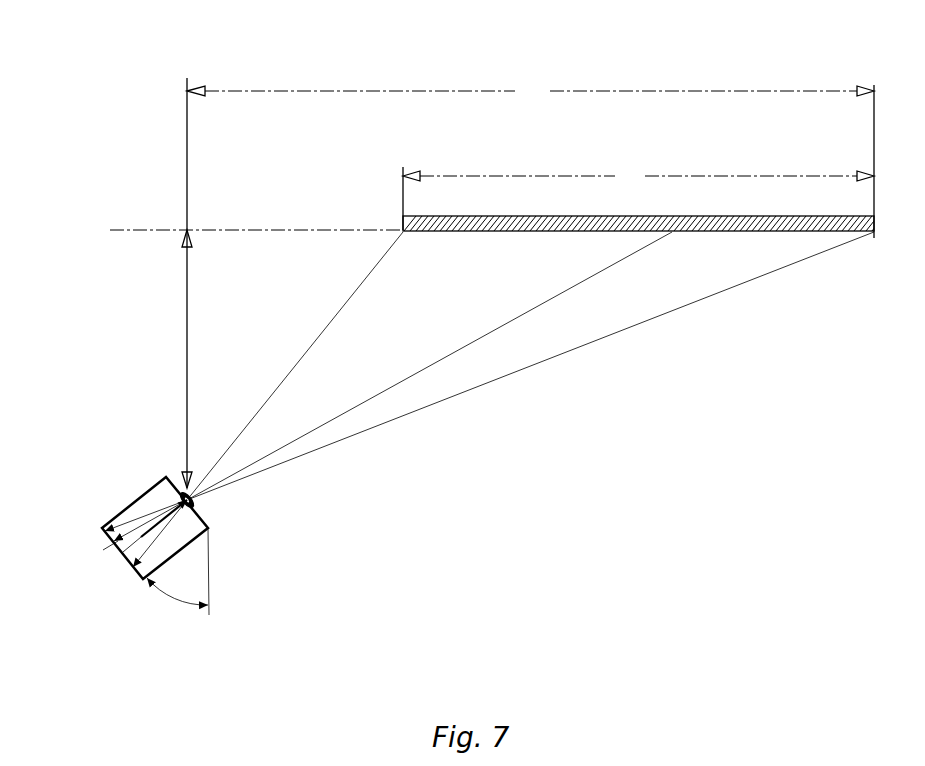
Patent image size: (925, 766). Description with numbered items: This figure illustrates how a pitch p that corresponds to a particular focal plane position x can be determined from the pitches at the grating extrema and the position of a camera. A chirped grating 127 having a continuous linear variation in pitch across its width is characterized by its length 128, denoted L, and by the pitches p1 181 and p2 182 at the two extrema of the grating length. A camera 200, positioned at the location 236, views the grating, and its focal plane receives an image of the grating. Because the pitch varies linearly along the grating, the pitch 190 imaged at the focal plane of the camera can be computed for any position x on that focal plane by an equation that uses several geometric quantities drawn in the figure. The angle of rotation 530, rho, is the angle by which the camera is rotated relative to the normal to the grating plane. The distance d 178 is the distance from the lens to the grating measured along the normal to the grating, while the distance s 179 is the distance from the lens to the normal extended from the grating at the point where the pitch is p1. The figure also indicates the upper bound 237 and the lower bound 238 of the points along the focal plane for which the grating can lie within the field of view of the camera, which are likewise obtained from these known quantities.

The distance d 178 is at (187, 320).
The distance s 179 is at (393, 91).
The grating length L 128 is at (723, 176).
The chirped grating 127 is at (540, 215).
The pitch p2 182 is at (405, 231).
The pitch p1 181 is at (872, 235).
The pitch p 190 is at (670, 232).
The camera 200 is at (142, 495).
The upper bound 237 is at (100, 530).
The camera position 236 is at (82, 562).
The lower bound 238 is at (130, 572).
The angle of rotation rho 530 is at (173, 607).